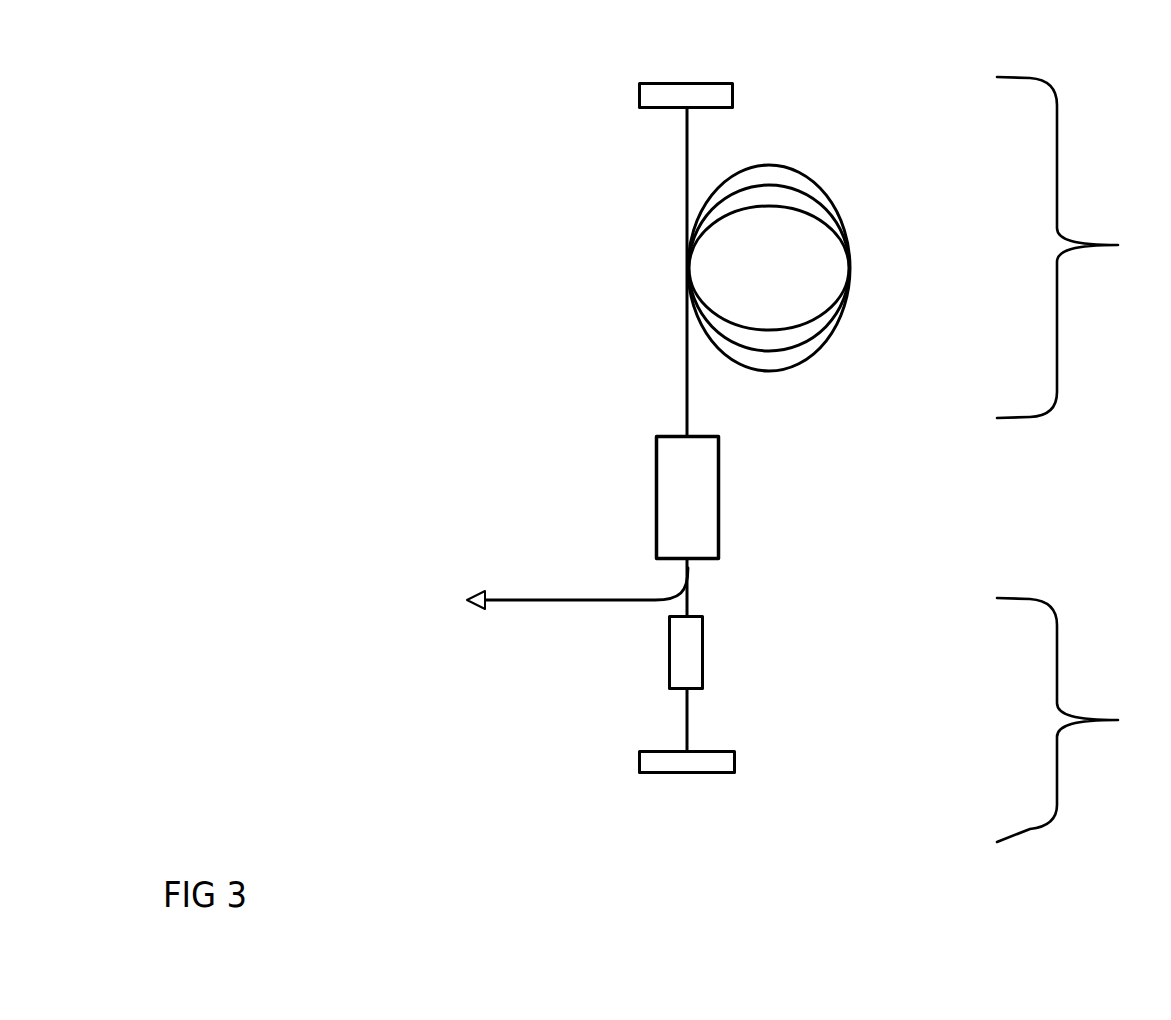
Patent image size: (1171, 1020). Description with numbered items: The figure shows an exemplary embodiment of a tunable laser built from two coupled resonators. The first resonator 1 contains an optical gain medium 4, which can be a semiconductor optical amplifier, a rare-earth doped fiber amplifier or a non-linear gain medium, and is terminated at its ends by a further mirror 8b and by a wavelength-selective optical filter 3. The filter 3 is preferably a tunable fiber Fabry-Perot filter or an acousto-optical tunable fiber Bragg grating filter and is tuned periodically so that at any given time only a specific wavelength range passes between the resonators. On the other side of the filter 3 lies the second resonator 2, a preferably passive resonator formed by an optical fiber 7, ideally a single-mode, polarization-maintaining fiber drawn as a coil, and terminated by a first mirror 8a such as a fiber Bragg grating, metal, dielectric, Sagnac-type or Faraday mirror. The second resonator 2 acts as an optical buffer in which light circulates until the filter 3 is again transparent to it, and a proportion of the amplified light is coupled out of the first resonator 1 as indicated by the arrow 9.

The first resonator 1 is at (1074, 720).
The second resonator 2 is at (1076, 247).
The wavelength-selective optical filter 3 is at (705, 456).
The optical gain medium 4 is at (693, 668).
The optical fiber 7 is at (847, 196).
The first mirror 8a is at (700, 90).
The further mirror 8b is at (702, 762).
The arrow 9 is at (542, 608).